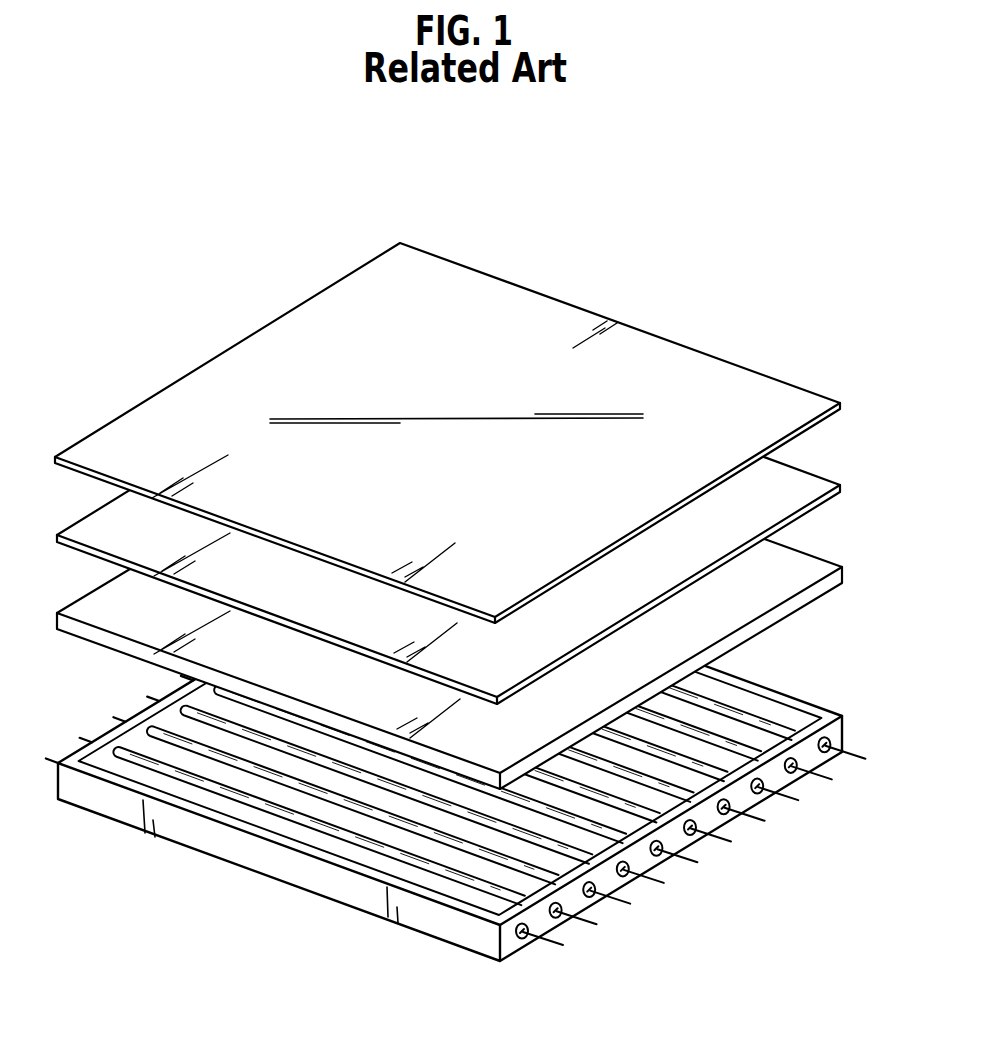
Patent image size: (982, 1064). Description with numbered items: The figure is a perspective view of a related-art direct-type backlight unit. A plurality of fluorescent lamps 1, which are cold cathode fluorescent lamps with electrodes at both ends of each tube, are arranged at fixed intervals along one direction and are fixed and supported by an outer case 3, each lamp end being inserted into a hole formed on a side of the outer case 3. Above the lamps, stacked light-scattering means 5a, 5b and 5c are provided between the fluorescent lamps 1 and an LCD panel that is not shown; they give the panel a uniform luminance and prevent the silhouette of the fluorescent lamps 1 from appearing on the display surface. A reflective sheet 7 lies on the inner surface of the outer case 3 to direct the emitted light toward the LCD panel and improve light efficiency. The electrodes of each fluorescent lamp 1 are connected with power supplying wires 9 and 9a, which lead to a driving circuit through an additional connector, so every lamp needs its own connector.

The fluorescent lamp 1 is at (280, 811).
The outer case 3 is at (477, 938).
The light-scattering means 5a is at (793, 562).
The light-scattering means 5b is at (793, 479).
The light-scattering means 5c is at (793, 397).
The reflective sheet 7 is at (393, 835).
The power supplying wire 9 is at (553, 946).
The power supplying wire 9a is at (48, 757).